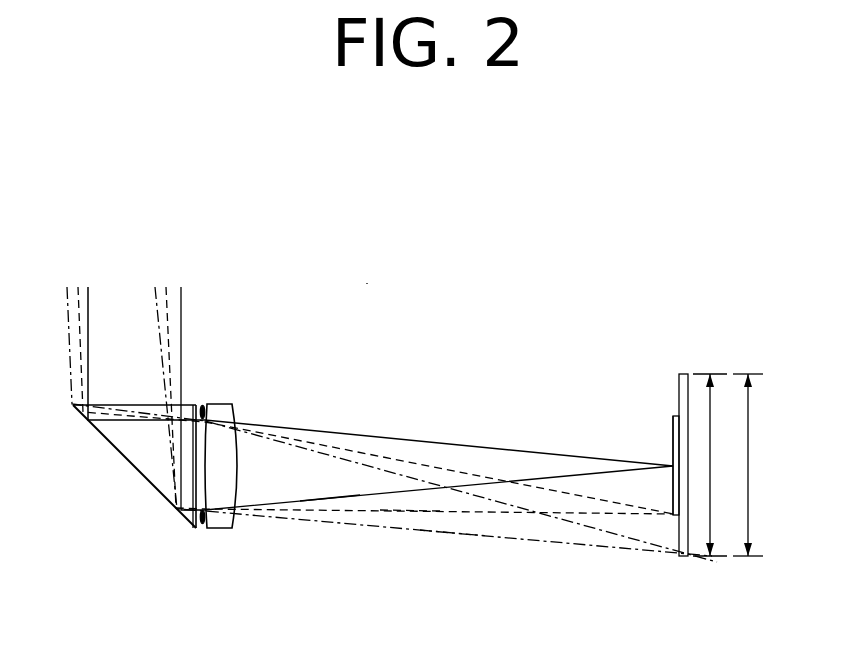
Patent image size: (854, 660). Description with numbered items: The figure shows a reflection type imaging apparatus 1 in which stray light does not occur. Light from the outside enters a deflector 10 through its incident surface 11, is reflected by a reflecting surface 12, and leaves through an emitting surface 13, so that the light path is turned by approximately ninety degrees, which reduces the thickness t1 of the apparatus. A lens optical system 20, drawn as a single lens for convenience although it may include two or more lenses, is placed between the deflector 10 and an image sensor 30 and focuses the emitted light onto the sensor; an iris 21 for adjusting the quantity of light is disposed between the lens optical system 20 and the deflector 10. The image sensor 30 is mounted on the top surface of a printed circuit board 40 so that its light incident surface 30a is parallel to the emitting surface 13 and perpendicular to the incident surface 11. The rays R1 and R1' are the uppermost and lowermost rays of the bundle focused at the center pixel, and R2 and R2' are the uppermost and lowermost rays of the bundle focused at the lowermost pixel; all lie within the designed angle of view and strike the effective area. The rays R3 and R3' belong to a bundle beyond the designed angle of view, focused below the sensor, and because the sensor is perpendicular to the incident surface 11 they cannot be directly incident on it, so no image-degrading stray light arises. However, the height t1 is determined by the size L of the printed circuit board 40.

The reflection type imaging apparatus 1 is at (371, 276).
The deflector 10 is at (131, 493).
The incident surface 11 is at (130, 404).
The reflecting surface 12 is at (126, 460).
The emitting surface 13 is at (195, 490).
The lens optical system 20 is at (245, 540).
The iris 21 is at (202, 405).
The image sensor 30 is at (667, 524).
The light incident surface 30a is at (673, 432).
The printed circuit board 40 is at (682, 558).
The uppermost ray of center light ray bundle R1 is at (380, 398).
The uppermost ray of lowermost light ray bundle R2 is at (375, 400).
The uppermost ray of light ray bundle beyond effective area R3 is at (392, 424).
The lowermost ray of center light ray bundle R1' is at (353, 537).
The lowermost ray of lowermost light ray bundle R2' is at (421, 545).
The lowermost ray of light ray bundle beyond effective area R3' is at (467, 560).
The size of printed circuit board L is at (711, 465).
The thickness of reflection type imaging apparatus t1 is at (753, 465).